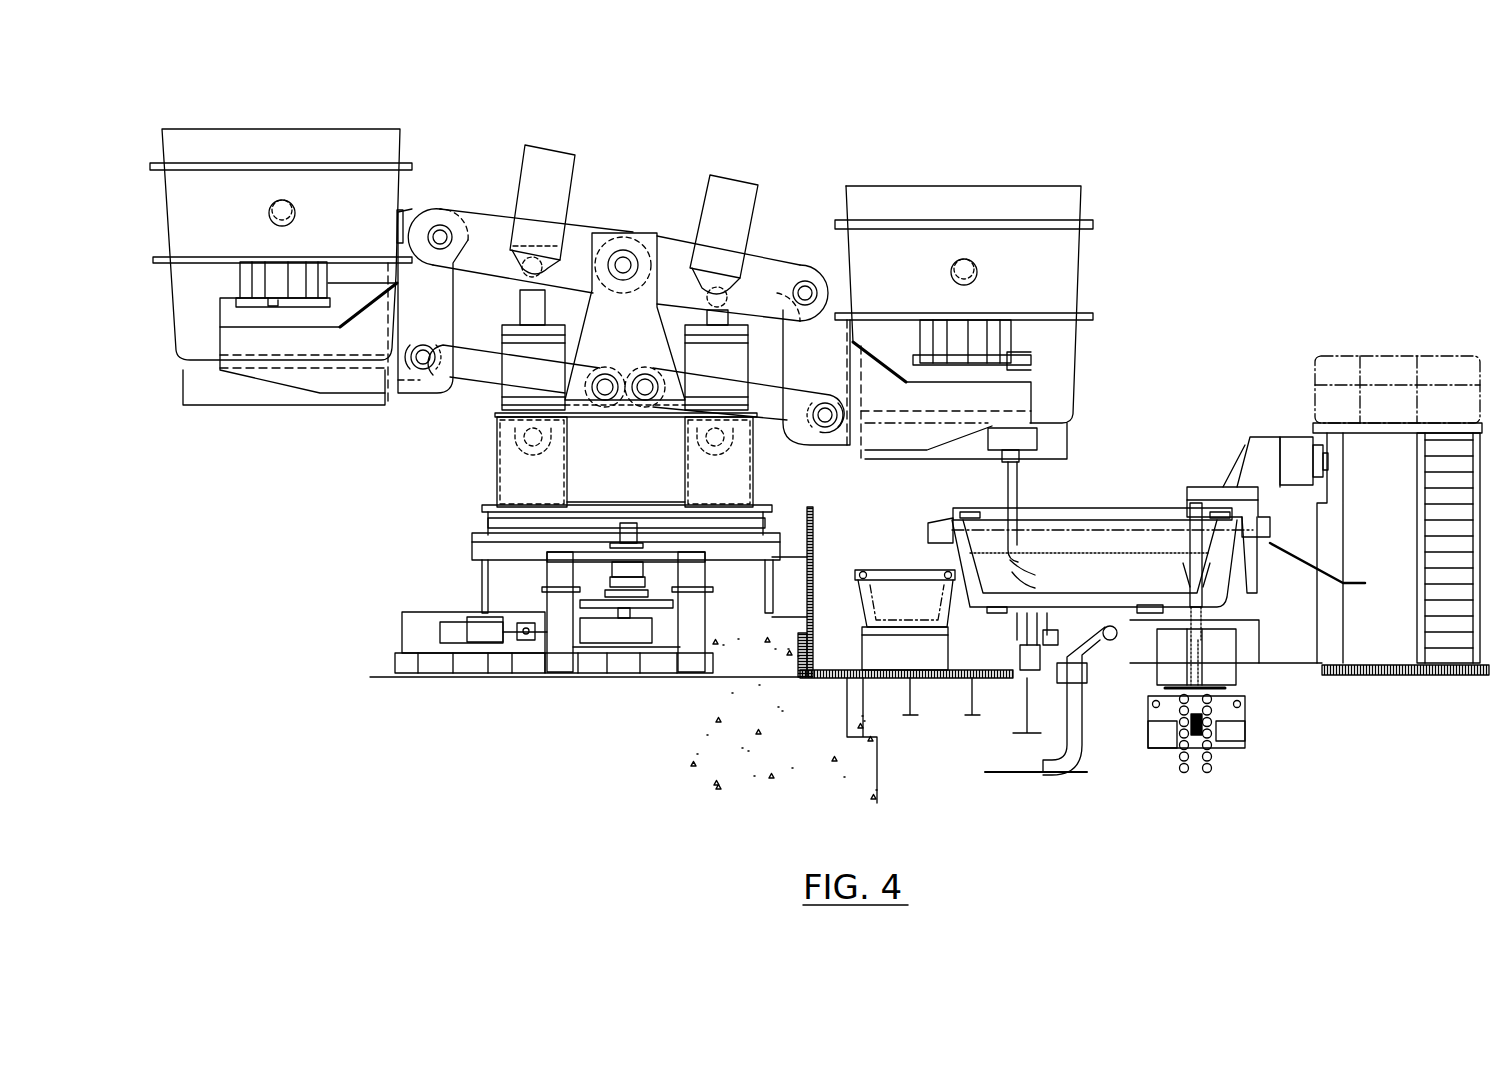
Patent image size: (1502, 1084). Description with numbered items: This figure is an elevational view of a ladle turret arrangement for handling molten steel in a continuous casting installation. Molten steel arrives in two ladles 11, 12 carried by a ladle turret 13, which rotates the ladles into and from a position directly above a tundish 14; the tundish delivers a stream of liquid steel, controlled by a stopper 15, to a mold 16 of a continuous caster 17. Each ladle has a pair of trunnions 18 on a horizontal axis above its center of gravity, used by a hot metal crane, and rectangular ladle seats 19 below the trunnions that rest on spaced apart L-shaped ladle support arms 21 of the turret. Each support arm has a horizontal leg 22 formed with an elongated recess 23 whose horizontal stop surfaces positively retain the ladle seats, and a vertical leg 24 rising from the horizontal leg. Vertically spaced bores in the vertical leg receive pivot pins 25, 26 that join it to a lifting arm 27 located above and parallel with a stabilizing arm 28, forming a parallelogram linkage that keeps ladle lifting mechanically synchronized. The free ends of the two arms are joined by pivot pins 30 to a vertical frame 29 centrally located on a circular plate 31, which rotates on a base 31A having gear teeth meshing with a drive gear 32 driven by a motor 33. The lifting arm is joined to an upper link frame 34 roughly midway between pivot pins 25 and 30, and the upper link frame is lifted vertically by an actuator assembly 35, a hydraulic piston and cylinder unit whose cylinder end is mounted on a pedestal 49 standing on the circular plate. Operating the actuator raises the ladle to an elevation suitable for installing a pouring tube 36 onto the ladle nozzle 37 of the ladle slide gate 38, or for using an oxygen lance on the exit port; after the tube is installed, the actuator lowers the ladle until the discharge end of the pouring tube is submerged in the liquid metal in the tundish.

The ladle 11 is at (330, 147).
The ladle 12 is at (1062, 198).
The ladle turret 13 is at (484, 492).
The tundish 14 is at (1131, 582).
The stopper 15 is at (1193, 542).
The mold 16 is at (1213, 630).
The continuous caster 17 is at (1243, 728).
The trunnions 18 is at (280, 207).
The ladle seats 19 is at (250, 303).
The ladle support arms 21 is at (398, 387).
The horizontal leg 22 is at (317, 349).
The elongated recess 23 is at (267, 313).
The vertical leg 24 is at (444, 296).
The pivot pin 25 is at (440, 230).
The pivot pin 26 is at (423, 370).
The lifting arm 27 is at (499, 249).
The stabilizing arm 28 is at (488, 370).
The vertical frame 29 is at (629, 334).
The pivot pins 30 is at (627, 258).
The circular plate 31 is at (775, 523).
The base 31A is at (773, 590).
The drive gear 32 is at (620, 533).
The motor 33 is at (462, 623).
The upper link frame 34 is at (542, 160).
The actuator assembly 35 is at (547, 354).
The pouring tube 36 is at (1020, 467).
The ladle nozzle 37 is at (1005, 453).
The ladle slide gate 38 is at (1037, 437).
The pedestal 49 is at (547, 495).